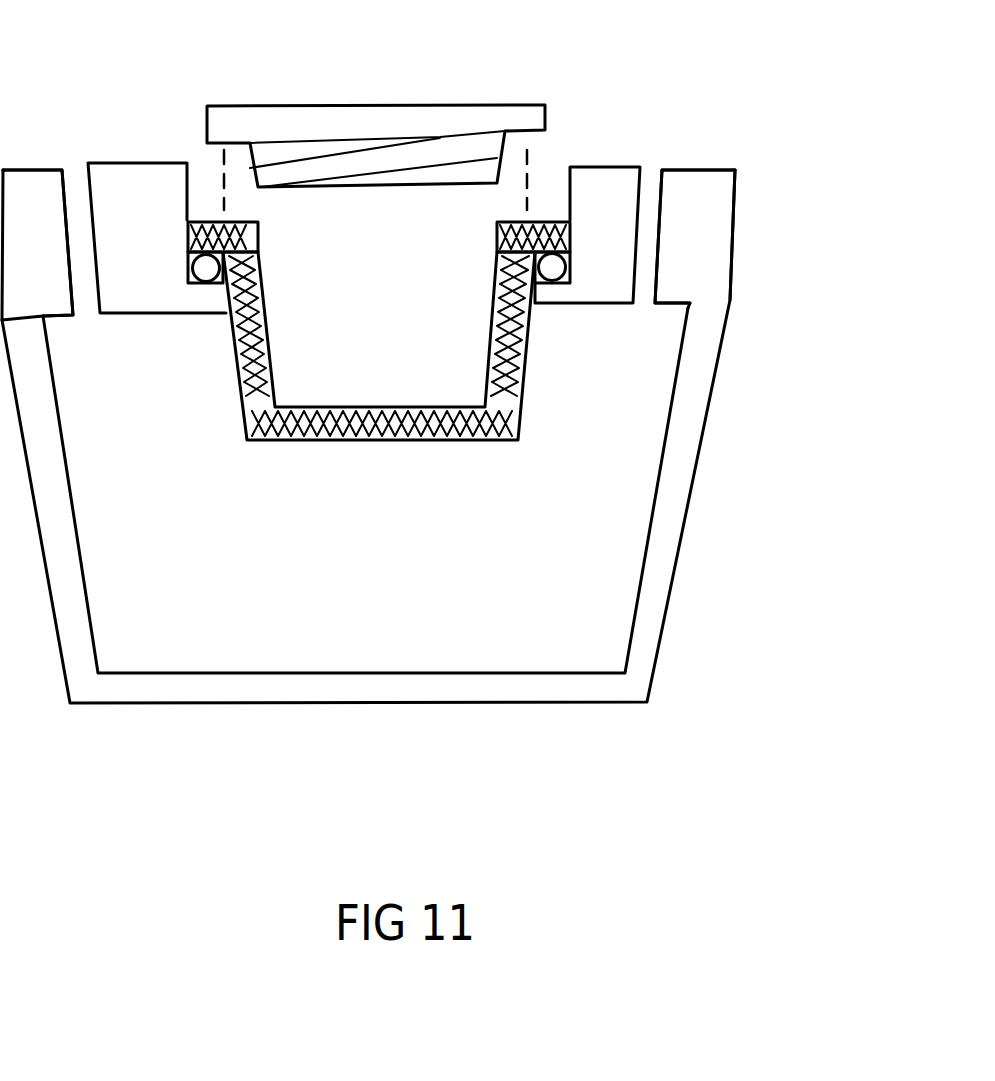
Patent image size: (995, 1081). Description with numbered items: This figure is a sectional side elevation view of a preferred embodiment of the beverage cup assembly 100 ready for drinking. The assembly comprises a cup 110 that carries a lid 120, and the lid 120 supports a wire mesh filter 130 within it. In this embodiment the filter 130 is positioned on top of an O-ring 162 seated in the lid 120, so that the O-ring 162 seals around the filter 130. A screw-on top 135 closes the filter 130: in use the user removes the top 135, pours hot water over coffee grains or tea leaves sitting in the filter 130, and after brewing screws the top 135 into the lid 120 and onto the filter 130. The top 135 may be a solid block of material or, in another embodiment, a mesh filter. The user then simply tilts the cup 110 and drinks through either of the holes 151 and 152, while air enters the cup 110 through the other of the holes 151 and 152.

The beverage cup assembly 100 is at (772, 375).
The cup 110 is at (680, 513).
The lid 120 is at (597, 190).
The wire mesh filter 130 is at (383, 440).
The top 135 is at (360, 123).
The hole 151 is at (655, 160).
The hole 152 is at (73, 160).
The O-ring 162 is at (567, 283).